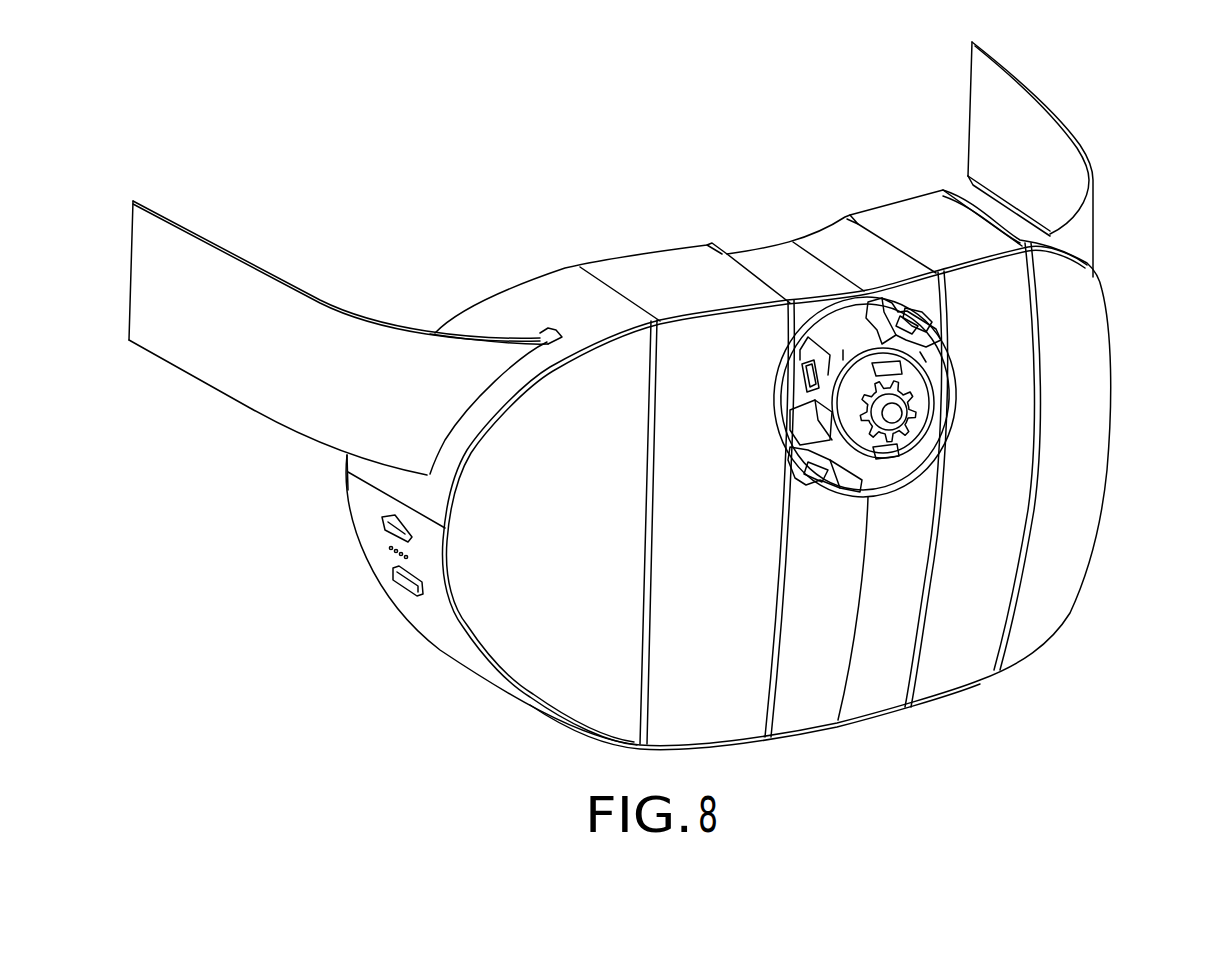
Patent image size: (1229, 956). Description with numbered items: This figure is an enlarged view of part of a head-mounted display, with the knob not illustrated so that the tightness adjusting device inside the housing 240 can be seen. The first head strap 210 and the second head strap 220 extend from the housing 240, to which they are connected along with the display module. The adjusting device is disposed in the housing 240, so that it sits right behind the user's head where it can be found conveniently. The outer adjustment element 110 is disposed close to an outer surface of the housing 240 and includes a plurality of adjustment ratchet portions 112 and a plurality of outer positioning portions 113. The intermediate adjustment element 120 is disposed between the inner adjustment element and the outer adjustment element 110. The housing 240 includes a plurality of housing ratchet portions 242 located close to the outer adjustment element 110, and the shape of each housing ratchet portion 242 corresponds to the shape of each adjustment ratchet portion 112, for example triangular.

The outer adjustment element 110 is at (813, 403).
The adjustment ratchet portions 112 is at (885, 298).
The outer positioning portions 113 is at (825, 468).
The intermediate adjustment element 120 is at (897, 410).
The first head strap 210 is at (1037, 153).
The second head strap 220 is at (223, 350).
The housing 240 is at (1079, 407).
The housing ratchet portions 242 is at (917, 310).